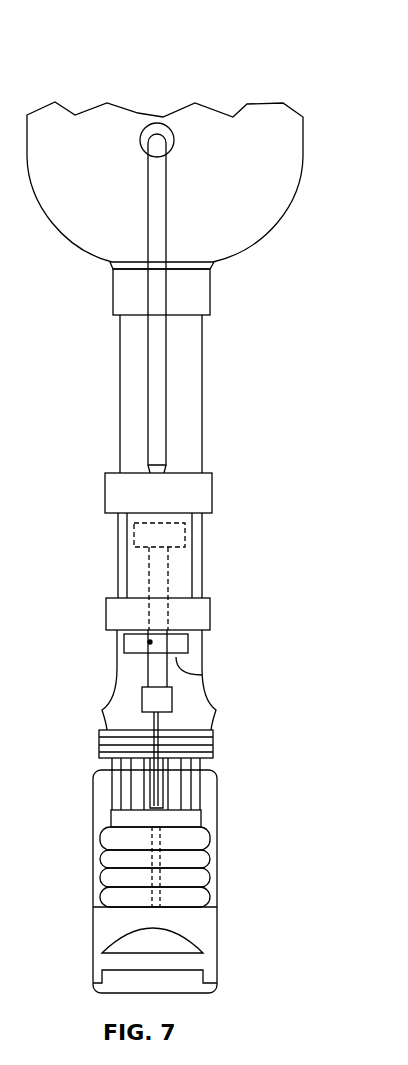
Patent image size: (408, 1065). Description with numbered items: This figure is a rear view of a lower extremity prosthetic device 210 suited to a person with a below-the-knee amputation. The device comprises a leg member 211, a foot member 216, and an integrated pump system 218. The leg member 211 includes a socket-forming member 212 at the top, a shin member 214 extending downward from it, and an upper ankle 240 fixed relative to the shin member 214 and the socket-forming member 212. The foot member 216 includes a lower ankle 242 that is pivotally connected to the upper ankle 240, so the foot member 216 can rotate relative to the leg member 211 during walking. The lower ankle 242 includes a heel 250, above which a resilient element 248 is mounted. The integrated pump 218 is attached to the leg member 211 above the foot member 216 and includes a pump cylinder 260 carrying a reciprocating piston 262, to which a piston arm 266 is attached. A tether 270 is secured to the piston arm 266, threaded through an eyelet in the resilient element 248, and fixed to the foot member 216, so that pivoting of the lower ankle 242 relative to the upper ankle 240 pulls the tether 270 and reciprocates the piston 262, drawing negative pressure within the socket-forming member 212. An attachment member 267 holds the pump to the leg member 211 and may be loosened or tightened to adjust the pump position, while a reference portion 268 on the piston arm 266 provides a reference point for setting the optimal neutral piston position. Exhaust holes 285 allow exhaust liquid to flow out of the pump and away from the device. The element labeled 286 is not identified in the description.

The lower extremity prosthetic device 210 is at (54, 73).
The leg member 211 is at (246, 432).
The socket-forming member 212 is at (268, 240).
The shin member 214 is at (212, 371).
The foot member 216 is at (235, 858).
The integrated pump system 218 is at (189, 552).
The upper ankle 240 is at (200, 748).
The lower ankle 242 is at (100, 923).
The resilient element 248 is at (110, 860).
The heel 250 is at (207, 988).
The pump cylinder 260 is at (183, 578).
The piston 262 is at (137, 537).
The piston arm 266 is at (155, 673).
The attachment member 267 is at (202, 617).
The reference portion 268 is at (145, 641).
The tether 270 is at (160, 797).
The exhaust holes 285 is at (202, 675).
The rod 286 is at (153, 362).